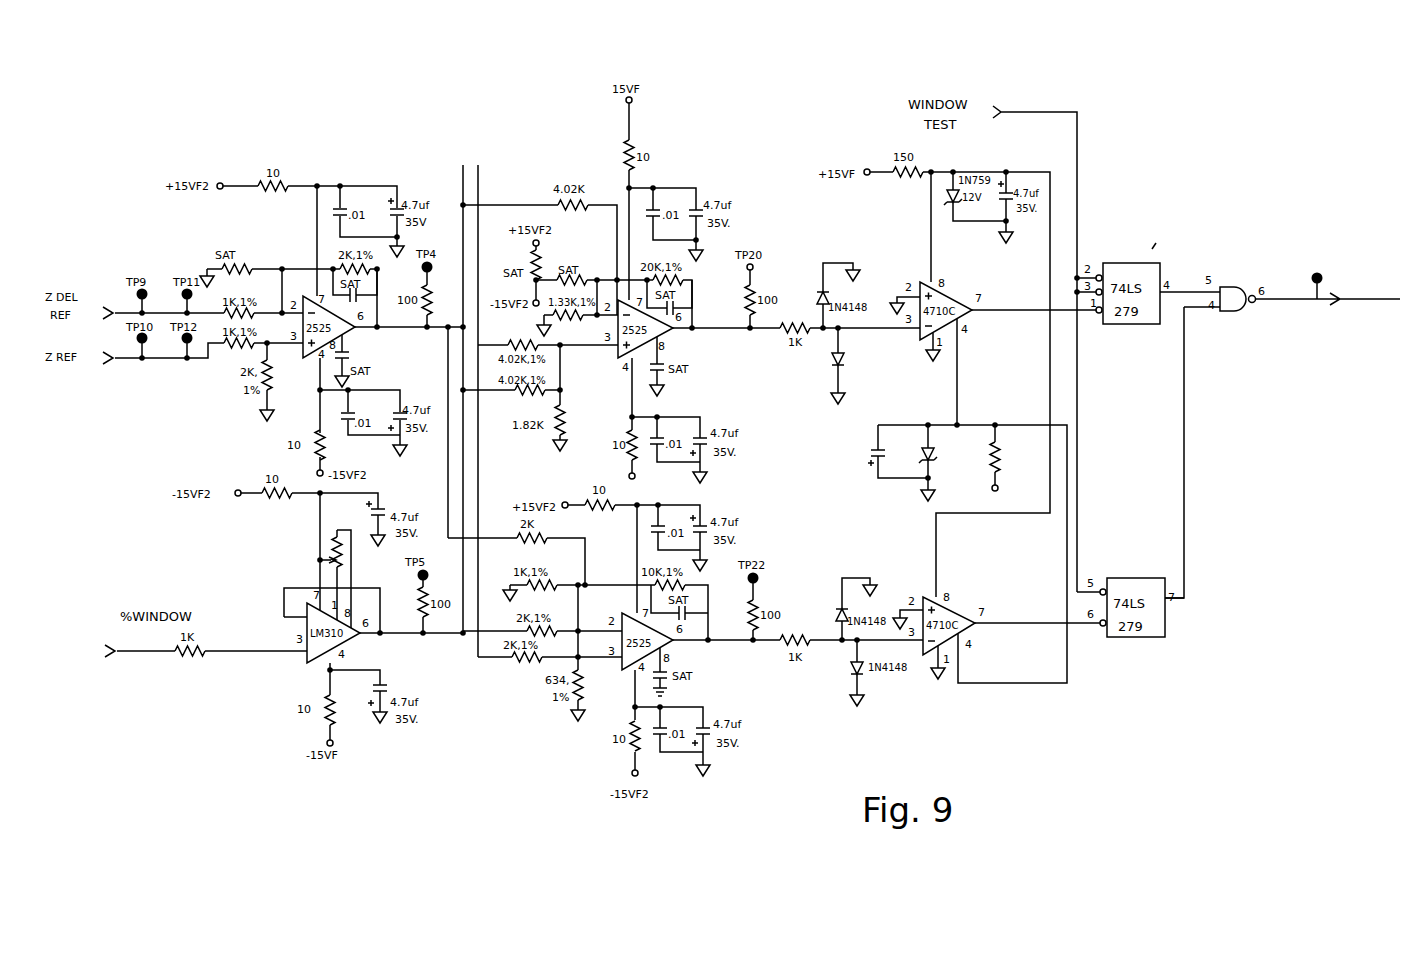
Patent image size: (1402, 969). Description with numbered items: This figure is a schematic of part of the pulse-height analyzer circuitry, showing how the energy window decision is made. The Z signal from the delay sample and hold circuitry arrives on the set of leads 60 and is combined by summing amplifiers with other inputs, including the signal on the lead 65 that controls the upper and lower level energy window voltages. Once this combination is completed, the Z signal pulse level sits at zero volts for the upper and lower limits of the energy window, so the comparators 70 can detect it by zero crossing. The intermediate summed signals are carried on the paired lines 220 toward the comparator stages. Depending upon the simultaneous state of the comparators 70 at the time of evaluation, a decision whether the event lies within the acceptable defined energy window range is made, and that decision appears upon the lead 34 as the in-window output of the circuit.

The window signal lines 220 is at (490, 163).
The set of leads 60 is at (166, 375).
The lead 65 is at (144, 654).
The comparators 70 is at (898, 519).
The lead 34 is at (1298, 302).